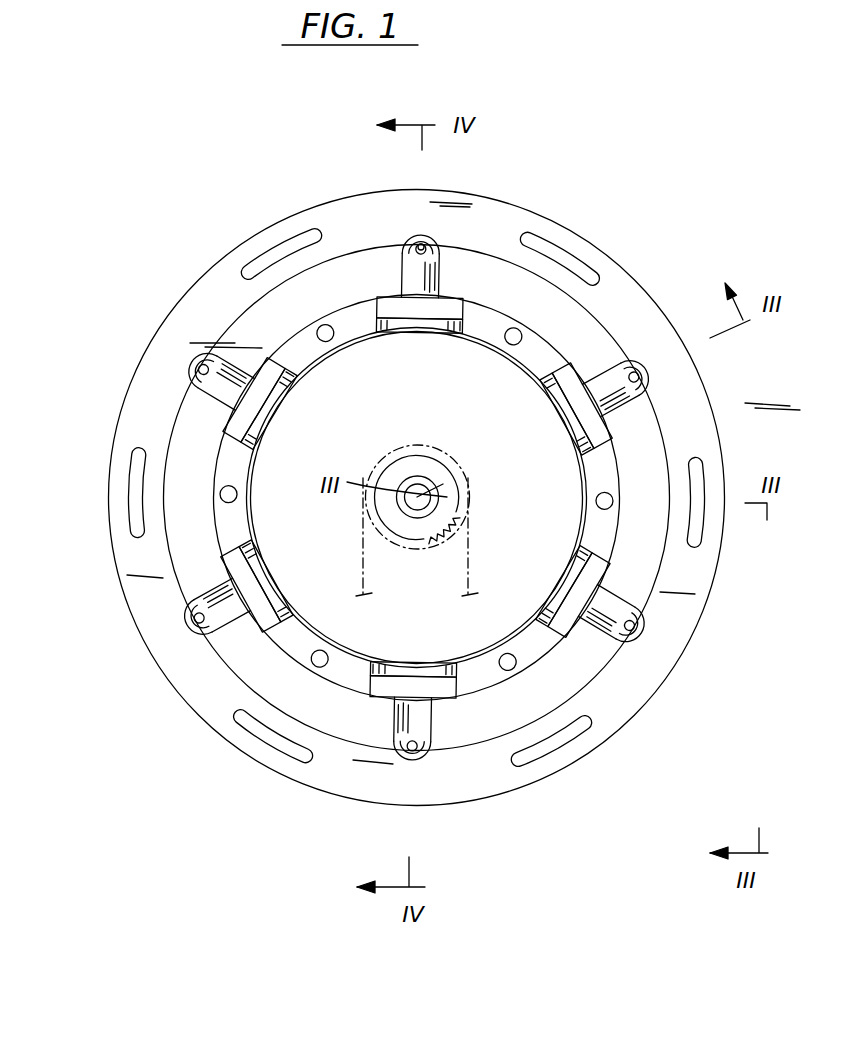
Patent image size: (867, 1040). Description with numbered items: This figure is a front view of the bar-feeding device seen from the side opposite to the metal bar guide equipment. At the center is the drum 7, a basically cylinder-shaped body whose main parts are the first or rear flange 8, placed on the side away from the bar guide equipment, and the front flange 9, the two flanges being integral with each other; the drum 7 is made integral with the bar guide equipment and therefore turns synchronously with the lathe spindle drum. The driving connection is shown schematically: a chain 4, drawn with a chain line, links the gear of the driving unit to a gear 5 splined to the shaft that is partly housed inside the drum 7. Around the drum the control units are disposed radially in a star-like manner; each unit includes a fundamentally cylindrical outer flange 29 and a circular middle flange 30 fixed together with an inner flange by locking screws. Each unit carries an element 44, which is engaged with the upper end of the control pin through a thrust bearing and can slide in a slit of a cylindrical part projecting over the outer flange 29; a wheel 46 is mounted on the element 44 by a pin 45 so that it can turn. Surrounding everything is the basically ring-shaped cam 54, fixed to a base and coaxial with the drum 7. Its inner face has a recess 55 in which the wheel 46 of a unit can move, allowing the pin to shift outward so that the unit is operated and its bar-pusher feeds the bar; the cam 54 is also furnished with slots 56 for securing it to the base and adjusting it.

The chain 4 is at (470, 565).
The gear 5 is at (417, 456).
The drum 7 is at (472, 705).
The first flange 8 is at (520, 383).
The front flange 9 is at (292, 647).
The outer flange 29 is at (230, 418).
The middle flange 30 is at (400, 322).
The element 44 is at (228, 378).
The pin 45 is at (432, 240).
The wheel 46 is at (200, 362).
The cam 54 is at (630, 712).
The recess 55 is at (284, 266).
The slots 56 is at (131, 520).